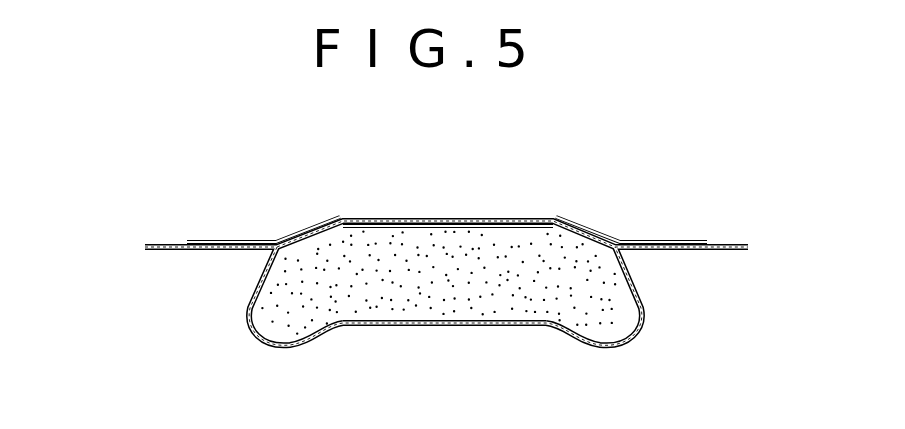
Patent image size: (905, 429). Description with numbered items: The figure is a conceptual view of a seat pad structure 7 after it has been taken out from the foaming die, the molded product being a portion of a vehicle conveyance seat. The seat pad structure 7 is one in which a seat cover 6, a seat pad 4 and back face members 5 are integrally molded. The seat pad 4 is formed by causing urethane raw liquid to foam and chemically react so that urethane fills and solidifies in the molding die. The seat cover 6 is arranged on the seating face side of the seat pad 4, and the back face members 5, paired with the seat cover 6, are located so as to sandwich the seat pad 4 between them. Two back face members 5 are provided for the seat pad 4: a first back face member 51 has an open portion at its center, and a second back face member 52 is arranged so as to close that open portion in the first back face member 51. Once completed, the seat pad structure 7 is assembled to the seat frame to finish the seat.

The seat pad structure 7 is at (133, 186).
The seat pad 4 is at (600, 293).
The back face members 5 is at (459, 191).
The first back face member 51 is at (229, 241).
The second back face member 52 is at (440, 218).
The seat cover 6 is at (442, 326).